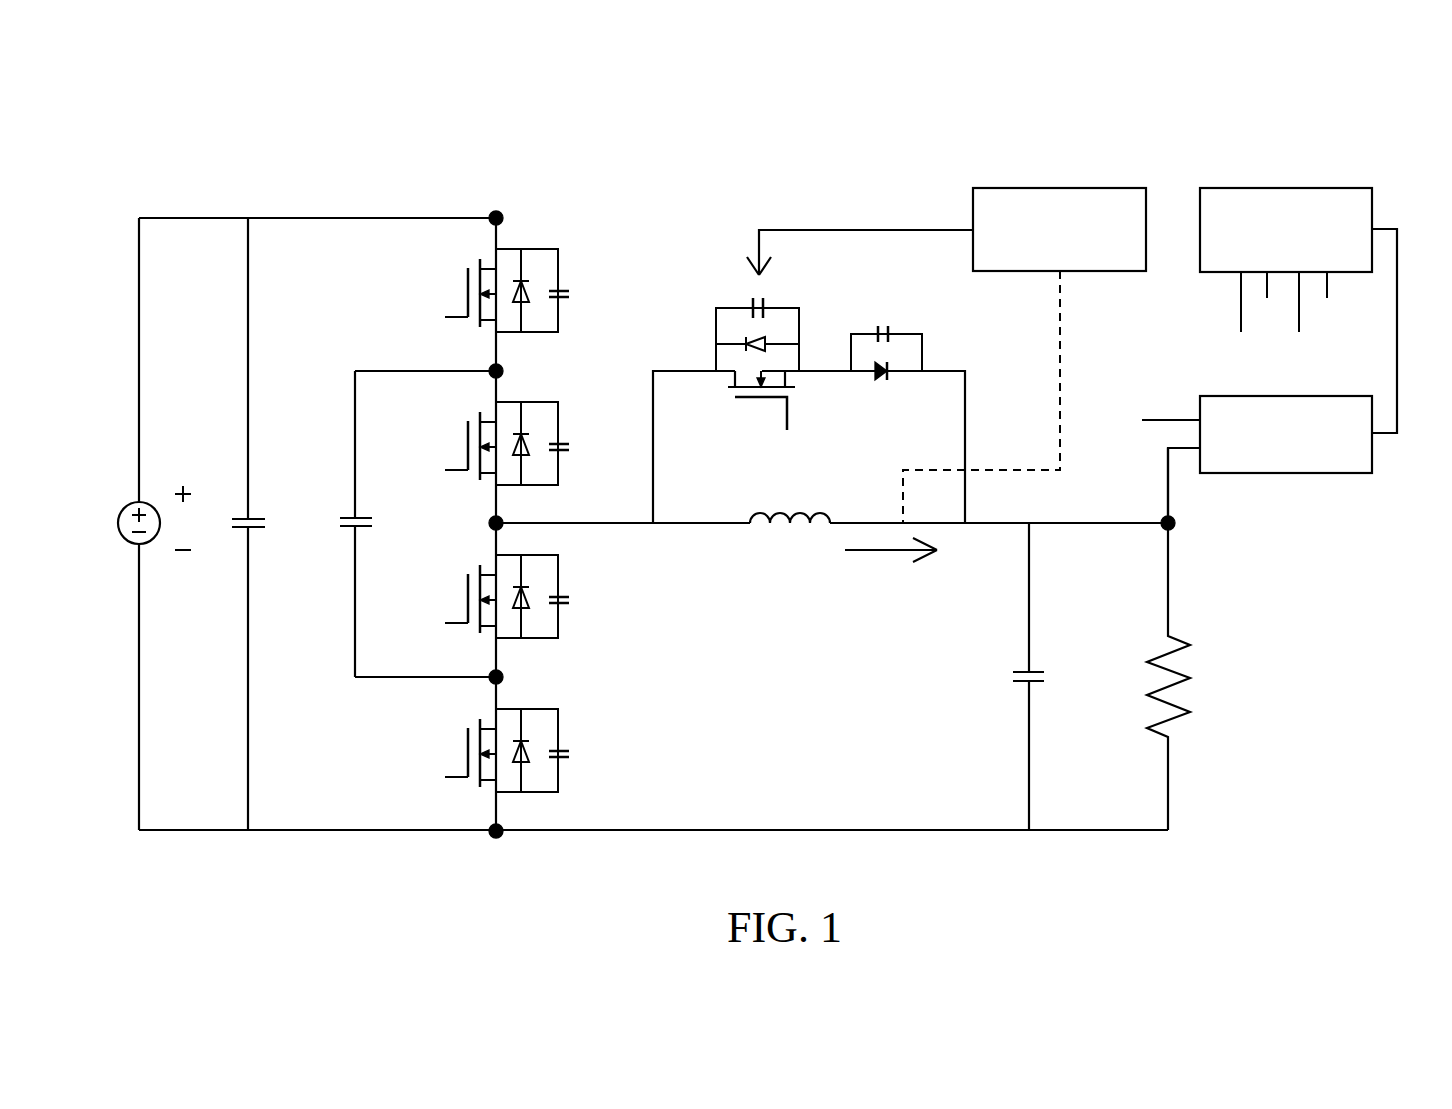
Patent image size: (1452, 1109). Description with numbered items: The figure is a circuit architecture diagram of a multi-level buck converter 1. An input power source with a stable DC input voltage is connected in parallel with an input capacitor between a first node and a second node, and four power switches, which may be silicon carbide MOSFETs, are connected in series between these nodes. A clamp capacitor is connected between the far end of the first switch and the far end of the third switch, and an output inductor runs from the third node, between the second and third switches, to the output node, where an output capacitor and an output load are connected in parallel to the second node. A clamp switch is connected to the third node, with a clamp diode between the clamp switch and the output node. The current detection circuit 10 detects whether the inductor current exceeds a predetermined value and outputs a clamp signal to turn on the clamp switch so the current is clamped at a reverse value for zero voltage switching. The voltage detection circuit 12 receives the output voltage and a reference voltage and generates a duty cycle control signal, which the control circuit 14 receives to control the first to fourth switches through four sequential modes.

The multi-level buck converter 1 is at (157, 181).
The current detection circuit 10 is at (973, 197).
The voltage detection circuit 12 is at (1286, 474).
The control circuit 14 is at (1233, 188).